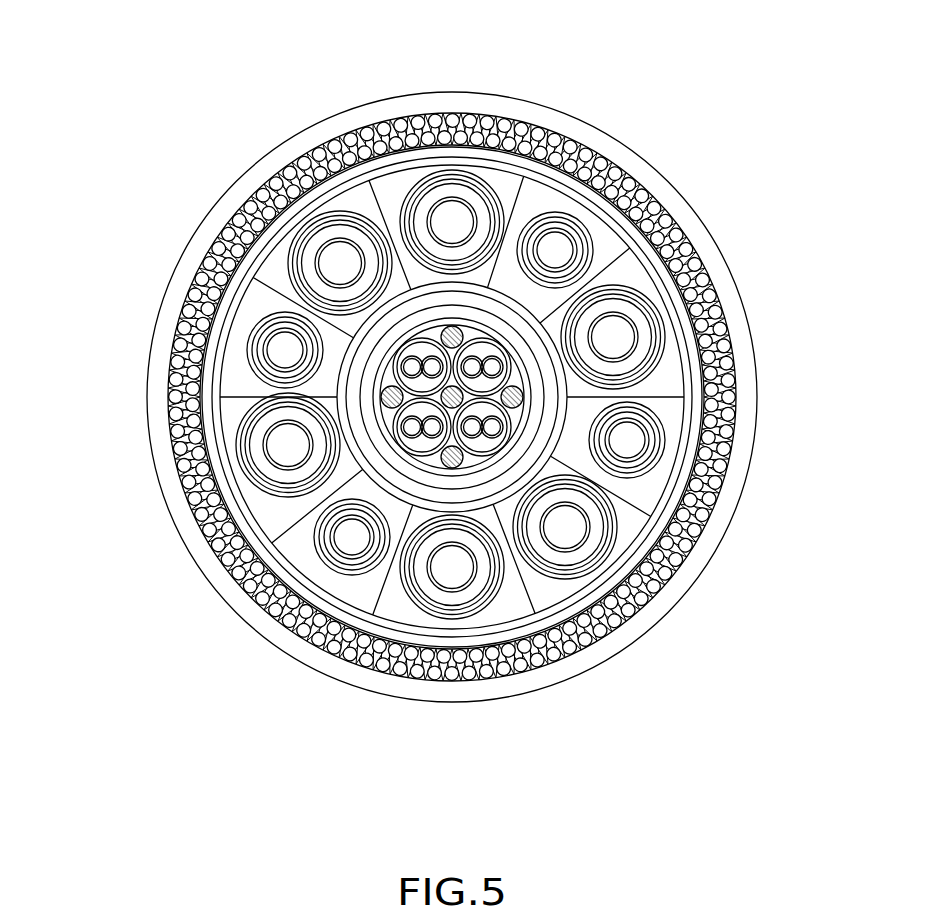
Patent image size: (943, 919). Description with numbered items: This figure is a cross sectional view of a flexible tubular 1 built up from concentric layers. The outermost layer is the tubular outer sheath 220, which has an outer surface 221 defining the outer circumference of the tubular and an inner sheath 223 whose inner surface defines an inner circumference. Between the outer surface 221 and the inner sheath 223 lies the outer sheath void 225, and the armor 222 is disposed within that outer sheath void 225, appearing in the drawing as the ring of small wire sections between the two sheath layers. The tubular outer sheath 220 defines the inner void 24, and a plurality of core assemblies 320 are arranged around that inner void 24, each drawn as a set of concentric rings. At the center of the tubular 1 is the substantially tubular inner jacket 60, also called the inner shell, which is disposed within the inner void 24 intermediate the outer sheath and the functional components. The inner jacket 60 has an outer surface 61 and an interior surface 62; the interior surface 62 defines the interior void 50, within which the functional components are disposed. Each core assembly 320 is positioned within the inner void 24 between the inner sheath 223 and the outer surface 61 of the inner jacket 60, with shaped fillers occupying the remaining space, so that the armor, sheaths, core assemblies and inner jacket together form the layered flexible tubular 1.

The tubular 1 is at (190, 65).
The inner void 24 is at (305, 556).
The interior void 50 is at (515, 416).
The inner jacket 60 is at (506, 268).
The outer surface 61 is at (468, 283).
The interior surface 62 is at (417, 318).
The tubular outer sheath 220 is at (142, 300).
The outer surface 221 is at (150, 383).
The armor 222 is at (396, 640).
The inner sheath 223 is at (467, 638).
The outer sheath void 225 is at (240, 218).
The core assemblies 320 is at (437, 170).